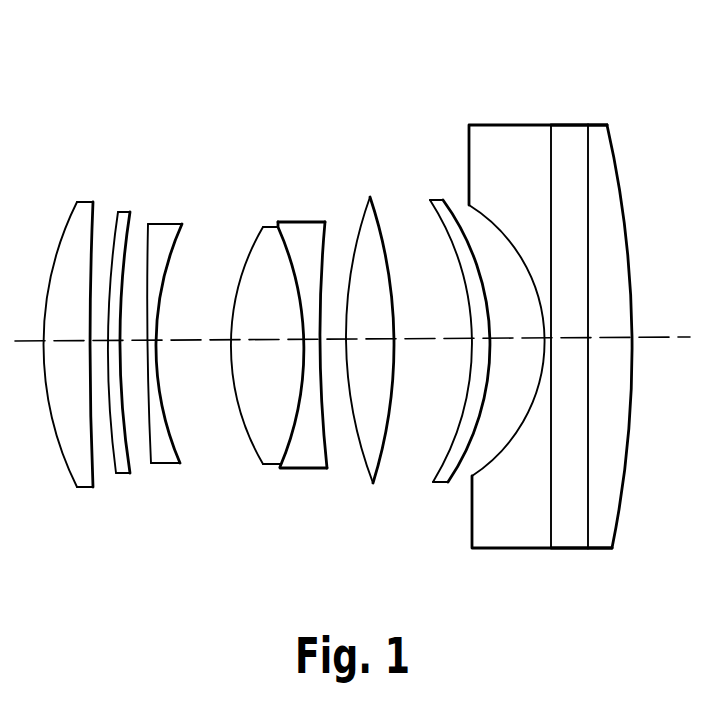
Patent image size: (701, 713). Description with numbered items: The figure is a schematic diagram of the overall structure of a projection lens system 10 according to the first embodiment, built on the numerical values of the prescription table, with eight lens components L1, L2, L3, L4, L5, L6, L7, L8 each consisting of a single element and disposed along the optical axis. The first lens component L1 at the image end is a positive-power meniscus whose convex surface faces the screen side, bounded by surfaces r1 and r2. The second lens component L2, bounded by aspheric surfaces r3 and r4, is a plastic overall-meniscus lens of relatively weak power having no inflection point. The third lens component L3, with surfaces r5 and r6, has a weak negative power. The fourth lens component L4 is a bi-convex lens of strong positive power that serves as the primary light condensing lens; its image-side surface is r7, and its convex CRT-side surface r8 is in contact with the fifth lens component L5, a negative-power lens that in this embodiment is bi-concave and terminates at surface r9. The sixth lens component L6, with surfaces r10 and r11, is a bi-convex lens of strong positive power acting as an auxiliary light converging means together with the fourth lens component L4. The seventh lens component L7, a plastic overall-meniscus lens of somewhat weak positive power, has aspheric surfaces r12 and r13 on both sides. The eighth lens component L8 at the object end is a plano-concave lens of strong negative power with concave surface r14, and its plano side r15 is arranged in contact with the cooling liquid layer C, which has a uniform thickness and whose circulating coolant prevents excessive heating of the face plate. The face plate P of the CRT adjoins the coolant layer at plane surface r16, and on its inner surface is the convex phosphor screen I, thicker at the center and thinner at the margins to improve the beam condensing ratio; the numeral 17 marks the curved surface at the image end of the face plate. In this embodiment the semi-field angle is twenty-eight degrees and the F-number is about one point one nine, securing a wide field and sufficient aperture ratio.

The projection lens system 10 is at (545, 45).
The first lens component L1 is at (84, 200).
The second lens component L2 is at (127, 210).
The third lens component L3 is at (164, 222).
The fourth lens component L4 is at (268, 225).
The fifth lens component L5 is at (310, 220).
The sixth lens component L6 is at (370, 196).
The seventh lens component L7 is at (440, 198).
The eighth lens component L8 is at (497, 123).
The cooling liquid layer C is at (557, 123).
The face plate P is at (600, 123).
The phosphor screen I is at (618, 160).
The image plane surface 17 is at (622, 512).
The first surface r1 is at (72, 484).
The second surface r2 is at (97, 491).
The third surface r3 is at (118, 476).
The fourth surface r4 is at (122, 424).
The fifth surface r5 is at (154, 466).
The sixth surface r6 is at (178, 452).
The seventh surface r7 is at (262, 462).
The eighth surface r8 is at (281, 468).
The ninth surface r9 is at (328, 470).
The tenth surface r10 is at (372, 486).
The eleventh surface r11 is at (389, 446).
The twelfth surface r12 is at (454, 458).
The thirteenth surface r13 is at (450, 486).
The fourteenth surface r14 is at (480, 530).
The fifteenth surface r15 is at (549, 546).
The sixteenth surface r16 is at (589, 546).